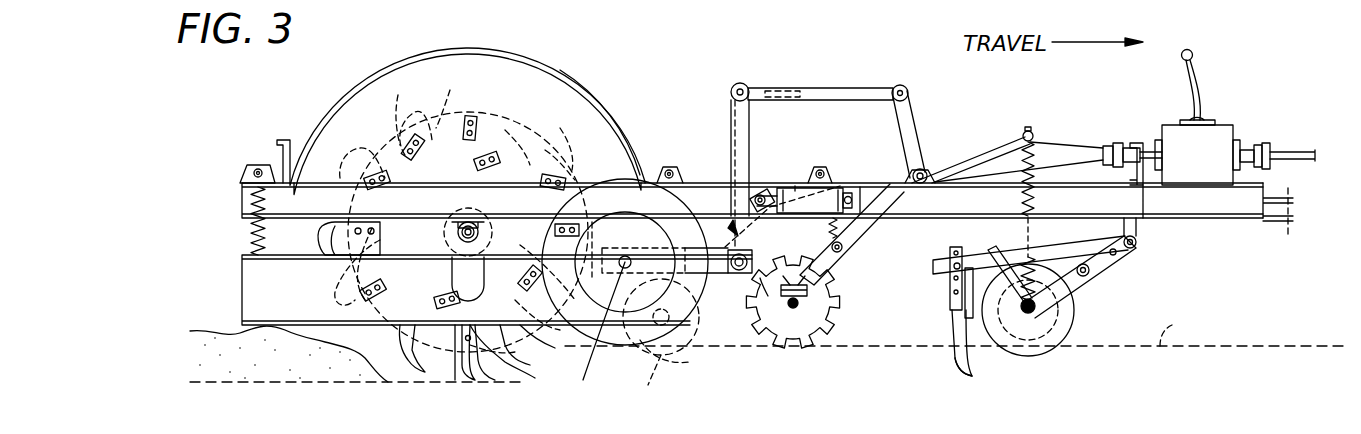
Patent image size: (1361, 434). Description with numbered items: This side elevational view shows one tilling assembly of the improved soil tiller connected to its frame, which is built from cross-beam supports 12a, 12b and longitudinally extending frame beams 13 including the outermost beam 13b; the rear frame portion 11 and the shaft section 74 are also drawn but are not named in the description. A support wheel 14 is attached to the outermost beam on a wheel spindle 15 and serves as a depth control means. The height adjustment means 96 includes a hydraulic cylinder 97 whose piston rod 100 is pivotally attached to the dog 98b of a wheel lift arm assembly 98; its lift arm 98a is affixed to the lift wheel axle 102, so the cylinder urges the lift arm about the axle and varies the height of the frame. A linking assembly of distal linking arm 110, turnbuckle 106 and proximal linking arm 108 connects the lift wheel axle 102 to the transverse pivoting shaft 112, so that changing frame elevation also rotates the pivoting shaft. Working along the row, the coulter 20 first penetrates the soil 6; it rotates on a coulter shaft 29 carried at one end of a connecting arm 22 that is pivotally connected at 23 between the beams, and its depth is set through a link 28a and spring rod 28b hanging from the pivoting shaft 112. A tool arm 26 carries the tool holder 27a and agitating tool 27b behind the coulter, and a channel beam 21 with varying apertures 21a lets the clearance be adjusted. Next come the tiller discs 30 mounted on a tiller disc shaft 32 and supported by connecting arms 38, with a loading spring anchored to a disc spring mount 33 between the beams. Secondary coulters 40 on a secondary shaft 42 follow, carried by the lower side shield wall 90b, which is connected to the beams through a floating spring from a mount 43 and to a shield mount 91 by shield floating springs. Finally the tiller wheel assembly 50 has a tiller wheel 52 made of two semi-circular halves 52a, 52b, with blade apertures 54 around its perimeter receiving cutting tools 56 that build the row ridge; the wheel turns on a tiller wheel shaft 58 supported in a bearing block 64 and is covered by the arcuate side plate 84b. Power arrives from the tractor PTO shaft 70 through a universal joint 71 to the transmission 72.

The soil 6 is at (1175, 324).
The rear frame 11 is at (1218, 210).
The cross-beam support 12a is at (1137, 143).
The cross-beam support 12b is at (286, 140).
The longitudinally extending frame beam 13 is at (245, 190).
The outermost beam 13b is at (875, 196).
The support wheel 14 is at (678, 205).
The wheel spindle 15 is at (595, 333).
The coulter 20 is at (1066, 310).
The channel beam 21 is at (992, 344).
The apertures 21a is at (998, 250).
The connecting arm 22 is at (1095, 268).
The pivotal connection 23 is at (1136, 248).
The tool arm 26 is at (935, 262).
The tool holder 27a is at (950, 295).
The agitating tool 27b is at (952, 330).
The link 28a is at (1003, 147).
The spring rod 28b is at (1037, 170).
The coulter shaft 29 is at (1060, 327).
The tiller disc 30 is at (830, 292).
The tiller disc shaft 32 is at (800, 308).
The disc spring mount 33 is at (812, 188).
The connecting arm 38 is at (850, 230).
The secondary coulter 40 is at (685, 362).
The secondary shaft 42 is at (661, 344).
The mount 43 is at (665, 168).
The tiller wheel assembly 50 is at (503, 75).
The tiller wheel 52 is at (437, 92).
The semi-circular half 52a is at (382, 208).
The semi-circular half 52b is at (544, 223).
The blade aperture 54 is at (510, 362).
The cutting tool 56 is at (478, 78).
The tiller wheel shaft 58 is at (458, 236).
The bearing block 64 is at (575, 240).
The power take off shaft 70 is at (1290, 152).
The universal joint 71 is at (1265, 143).
The transmission 72 is at (1222, 125).
The forward drive shaft 74 is at (1090, 155).
The side plate 84b is at (600, 125).
The lower side shield wall 90b is at (255, 305).
The shield mount 91 is at (248, 167).
The height adjustment means 96 is at (796, 186).
The hydraulic cylinder 97 is at (825, 172).
The wheel lift arm assembly 98 is at (735, 215).
The lift arm 98a is at (735, 273).
The dog 98b is at (742, 240).
The piston rod 100 is at (762, 194).
The lift wheel axle 102 is at (770, 290).
The turnbuckle 106 is at (792, 88).
The proximal linking arm 108 is at (912, 120).
The distal linking arm 110 is at (730, 115).
The pivoting shaft 112 is at (928, 172).